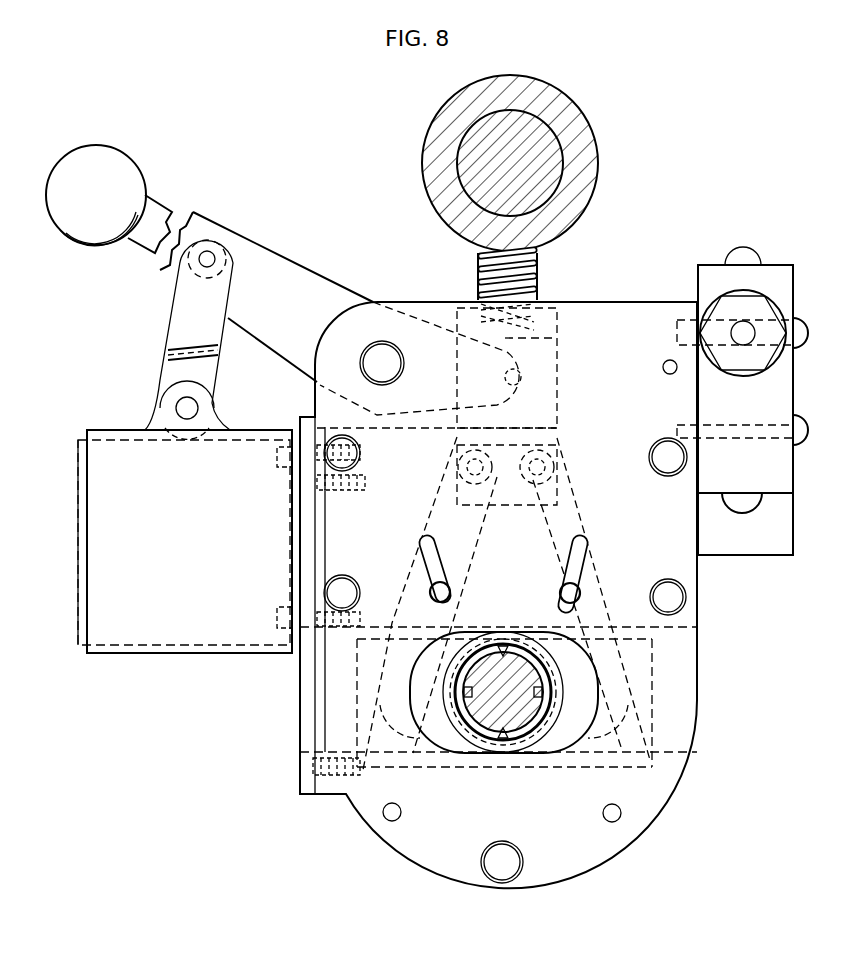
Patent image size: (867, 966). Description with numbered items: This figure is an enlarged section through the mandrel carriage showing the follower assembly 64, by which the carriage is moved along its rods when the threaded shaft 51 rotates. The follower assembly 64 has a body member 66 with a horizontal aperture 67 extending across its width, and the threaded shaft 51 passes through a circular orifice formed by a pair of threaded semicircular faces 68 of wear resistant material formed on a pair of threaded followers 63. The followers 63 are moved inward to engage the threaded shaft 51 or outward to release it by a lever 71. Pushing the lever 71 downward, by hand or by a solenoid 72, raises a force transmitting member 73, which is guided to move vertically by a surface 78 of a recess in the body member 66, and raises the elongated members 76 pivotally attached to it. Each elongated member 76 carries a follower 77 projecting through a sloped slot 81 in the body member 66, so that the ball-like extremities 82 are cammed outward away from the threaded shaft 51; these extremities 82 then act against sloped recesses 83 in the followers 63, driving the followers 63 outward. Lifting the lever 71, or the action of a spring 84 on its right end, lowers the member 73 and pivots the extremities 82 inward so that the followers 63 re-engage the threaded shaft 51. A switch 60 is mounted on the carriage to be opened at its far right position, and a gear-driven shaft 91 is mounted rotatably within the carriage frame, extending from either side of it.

The threaded shaft 51 is at (493, 725).
The switch 60 is at (748, 282).
The threaded followers 63 is at (357, 658).
The follower assembly 64 is at (636, 829).
The body member 66 is at (466, 860).
The horizontal aperture 67 is at (690, 725).
The threaded semicircular faces 68 is at (527, 670).
The lever 71 is at (285, 275).
The solenoid 72 is at (215, 630).
The force transmitting member 73 is at (555, 397).
The elongated members 76 is at (460, 575).
The follower 77 is at (430, 592).
The surface 78 is at (457, 422).
The slot 81 is at (420, 540).
The ball-like extremities 82 is at (380, 710).
The recesses 83 is at (498, 772).
The spring 84 is at (537, 277).
The shaft 91 is at (527, 153).